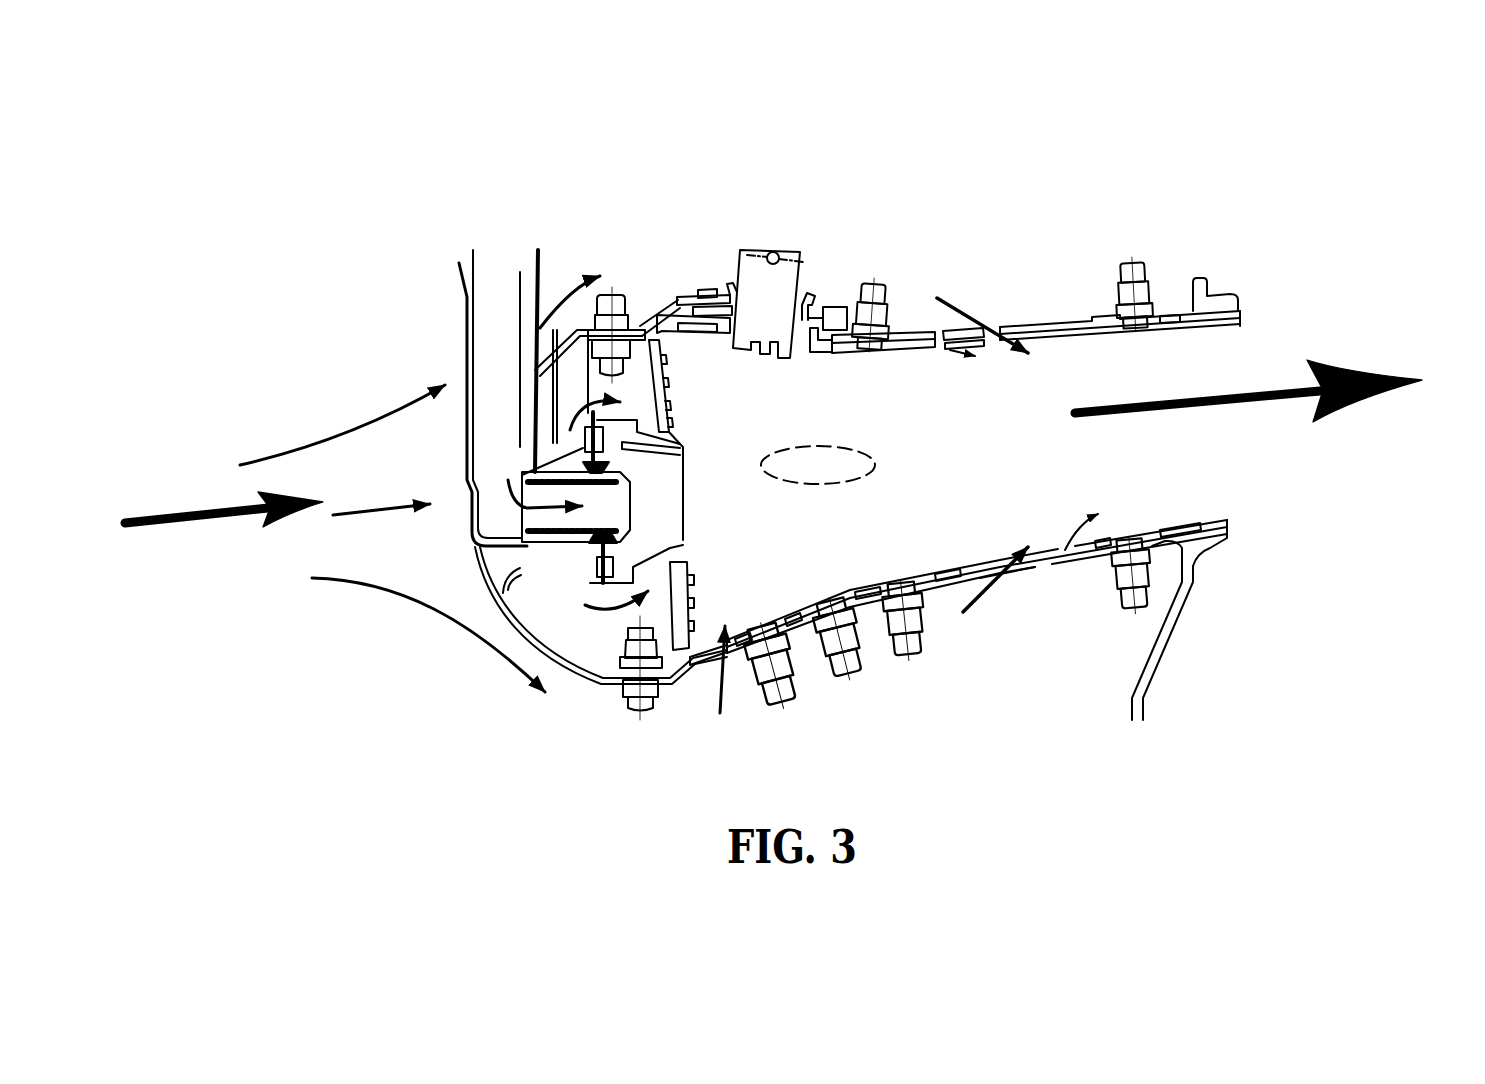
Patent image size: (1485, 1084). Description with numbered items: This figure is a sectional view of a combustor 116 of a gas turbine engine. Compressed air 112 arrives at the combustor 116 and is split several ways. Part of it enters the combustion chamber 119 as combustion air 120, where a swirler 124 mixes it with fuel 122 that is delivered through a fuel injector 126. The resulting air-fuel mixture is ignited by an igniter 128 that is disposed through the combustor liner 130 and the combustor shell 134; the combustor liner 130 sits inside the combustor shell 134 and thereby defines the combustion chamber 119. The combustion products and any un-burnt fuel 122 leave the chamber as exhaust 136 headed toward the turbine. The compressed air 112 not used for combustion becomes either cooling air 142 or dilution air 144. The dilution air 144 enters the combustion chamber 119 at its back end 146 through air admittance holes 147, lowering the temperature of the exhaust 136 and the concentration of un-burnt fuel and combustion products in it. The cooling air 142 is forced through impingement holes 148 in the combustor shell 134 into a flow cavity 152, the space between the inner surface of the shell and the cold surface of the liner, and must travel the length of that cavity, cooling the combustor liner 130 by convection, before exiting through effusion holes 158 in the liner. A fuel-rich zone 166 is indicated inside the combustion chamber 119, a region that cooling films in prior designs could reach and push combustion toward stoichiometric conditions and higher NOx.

The compressed air 112 is at (373, 587).
The combustor 116 is at (1242, 225).
The combustion chamber 119 is at (1026, 452).
The combustion air 120 is at (340, 512).
The fuel 122 is at (501, 452).
The swirler 124 is at (700, 558).
The fuel injector 126 is at (497, 524).
The igniter 128 is at (760, 290).
The combustor liner 130 is at (1243, 318).
The combustor shell 134 is at (1138, 300).
The exhaust 136 is at (1395, 380).
The cooling air 142 is at (1012, 598).
The dilution air 144 is at (1017, 350).
The back end 146 is at (1257, 745).
The air admittance holes 147 is at (990, 325).
The impingement holes 148 is at (918, 327).
The flow cavity 152 is at (1057, 327).
The effusion holes 158 is at (943, 348).
The fuel-rich zone 166 is at (818, 465).